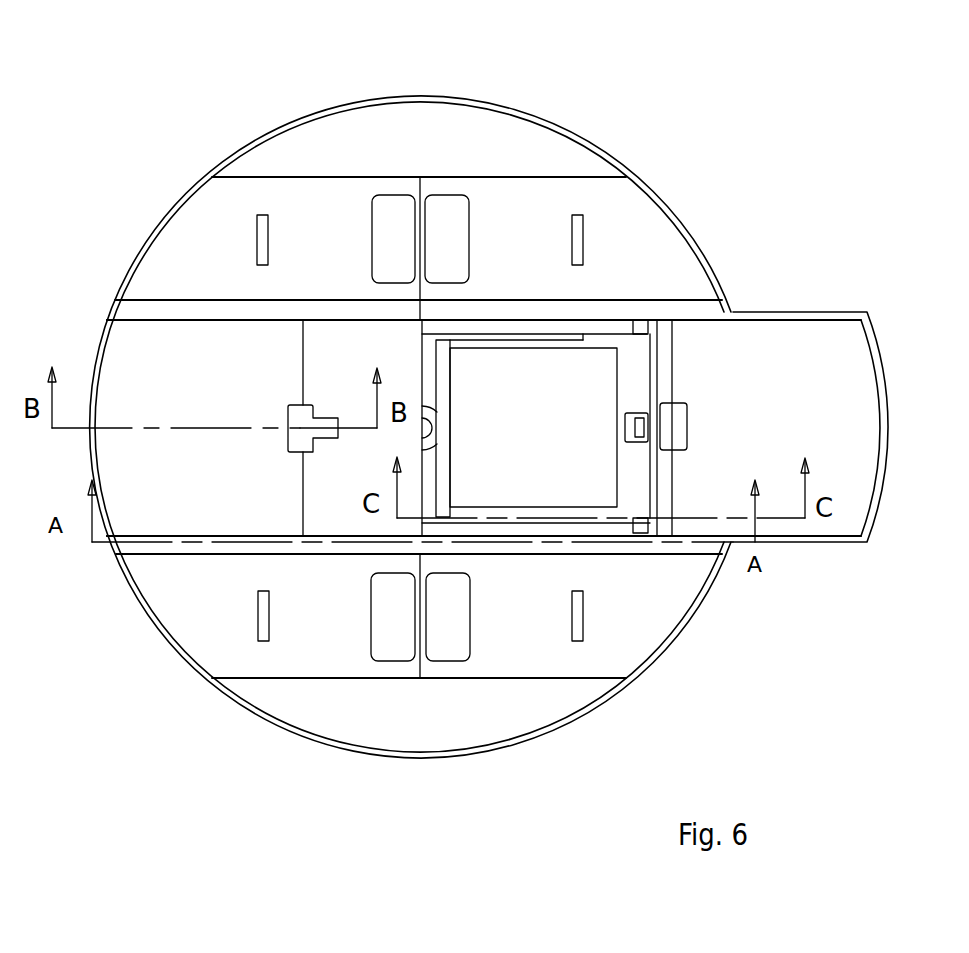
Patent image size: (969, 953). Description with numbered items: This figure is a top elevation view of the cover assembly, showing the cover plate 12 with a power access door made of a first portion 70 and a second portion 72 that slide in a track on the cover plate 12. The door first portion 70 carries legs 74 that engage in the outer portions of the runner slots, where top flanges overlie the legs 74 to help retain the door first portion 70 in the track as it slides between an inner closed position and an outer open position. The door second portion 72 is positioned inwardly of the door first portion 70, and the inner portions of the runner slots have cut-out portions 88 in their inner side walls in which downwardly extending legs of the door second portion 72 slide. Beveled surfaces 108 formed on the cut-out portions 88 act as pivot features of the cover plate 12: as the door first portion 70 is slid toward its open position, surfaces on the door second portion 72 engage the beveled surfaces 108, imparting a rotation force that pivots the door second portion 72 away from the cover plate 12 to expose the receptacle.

The cover plate 12 is at (435, 120).
The door first portion 70 is at (449, 428).
The door second portion 72 is at (332, 428).
The legs 74 is at (770, 310).
The cut-out portions 88 is at (487, 334).
The beveled surfaces 108 is at (585, 340).